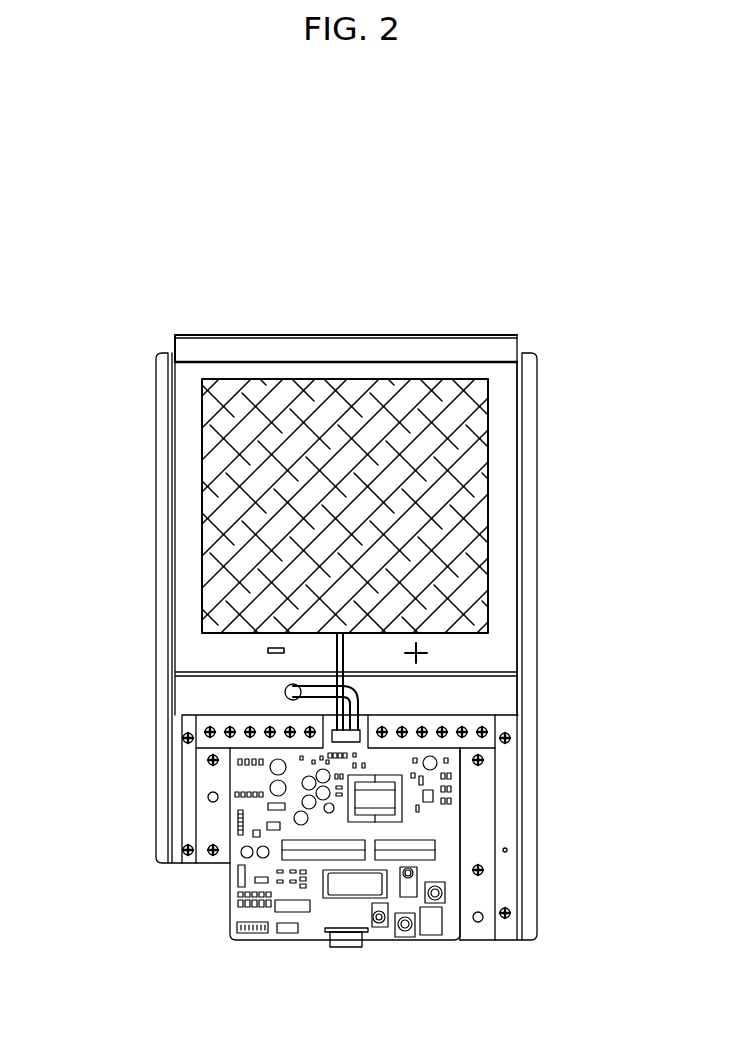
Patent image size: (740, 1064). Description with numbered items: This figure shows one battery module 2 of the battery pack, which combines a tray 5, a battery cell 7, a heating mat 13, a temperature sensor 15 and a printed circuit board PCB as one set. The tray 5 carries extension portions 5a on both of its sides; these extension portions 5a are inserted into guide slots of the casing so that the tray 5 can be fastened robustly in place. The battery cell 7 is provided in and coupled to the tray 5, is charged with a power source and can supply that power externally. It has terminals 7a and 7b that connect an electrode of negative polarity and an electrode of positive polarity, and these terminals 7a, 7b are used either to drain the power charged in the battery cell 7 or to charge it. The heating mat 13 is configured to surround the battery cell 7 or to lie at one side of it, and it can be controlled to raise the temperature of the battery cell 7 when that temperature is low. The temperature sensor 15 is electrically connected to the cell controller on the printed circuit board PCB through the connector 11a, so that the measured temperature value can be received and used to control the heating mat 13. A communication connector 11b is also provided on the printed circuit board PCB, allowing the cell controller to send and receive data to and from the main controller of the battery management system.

The battery module 2 is at (557, 352).
The tray 5 is at (479, 334).
The extension portions 5a is at (155, 602).
The battery cell 7 is at (505, 483).
The terminal 7a is at (478, 887).
The terminal 7b is at (207, 832).
The heating mat 13 is at (480, 538).
The temperature sensor 15 is at (285, 690).
The connector 11a is at (358, 733).
The communication connector 11b is at (350, 940).
The printed circuit board PCB is at (228, 890).